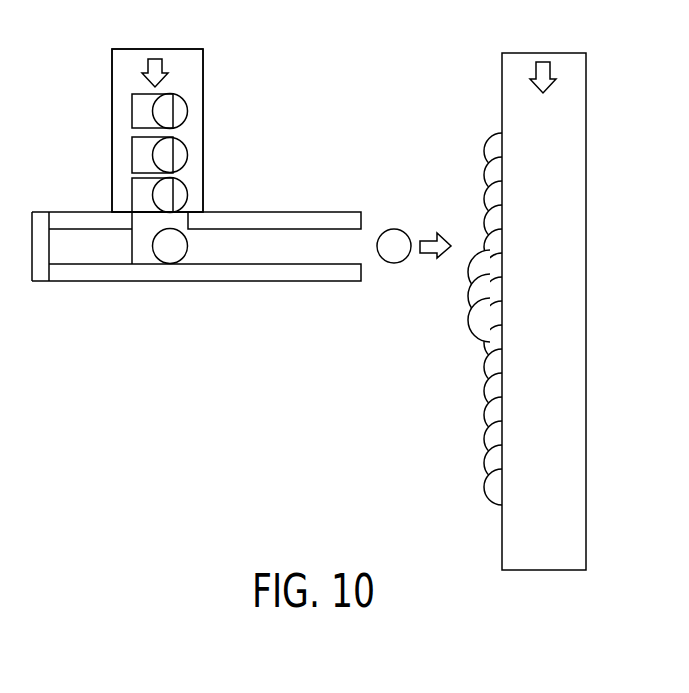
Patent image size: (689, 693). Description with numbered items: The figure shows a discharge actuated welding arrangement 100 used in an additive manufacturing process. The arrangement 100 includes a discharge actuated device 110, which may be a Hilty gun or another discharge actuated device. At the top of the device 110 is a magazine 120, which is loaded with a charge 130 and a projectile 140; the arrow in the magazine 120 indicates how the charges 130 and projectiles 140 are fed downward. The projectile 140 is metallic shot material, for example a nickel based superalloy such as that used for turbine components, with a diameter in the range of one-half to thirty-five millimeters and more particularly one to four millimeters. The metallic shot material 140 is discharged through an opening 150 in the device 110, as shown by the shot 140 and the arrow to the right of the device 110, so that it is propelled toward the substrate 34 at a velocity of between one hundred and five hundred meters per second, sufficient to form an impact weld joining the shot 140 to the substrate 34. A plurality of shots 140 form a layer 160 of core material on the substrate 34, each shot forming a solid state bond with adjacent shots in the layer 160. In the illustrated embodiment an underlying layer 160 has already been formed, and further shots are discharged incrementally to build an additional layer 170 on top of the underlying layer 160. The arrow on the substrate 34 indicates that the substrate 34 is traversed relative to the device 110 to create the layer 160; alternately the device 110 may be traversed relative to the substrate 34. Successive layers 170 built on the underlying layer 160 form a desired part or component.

The discharge actuated welding arrangement 100 is at (282, 58).
The discharge actuated device 110 is at (120, 163).
The magazine 120 is at (120, 81).
The charge 130 is at (142, 108).
The projectile 140 is at (173, 110).
The opening 150 is at (354, 246).
The layer 160 is at (490, 488).
The additional layer 170 is at (470, 323).
The substrate 34 is at (559, 327).